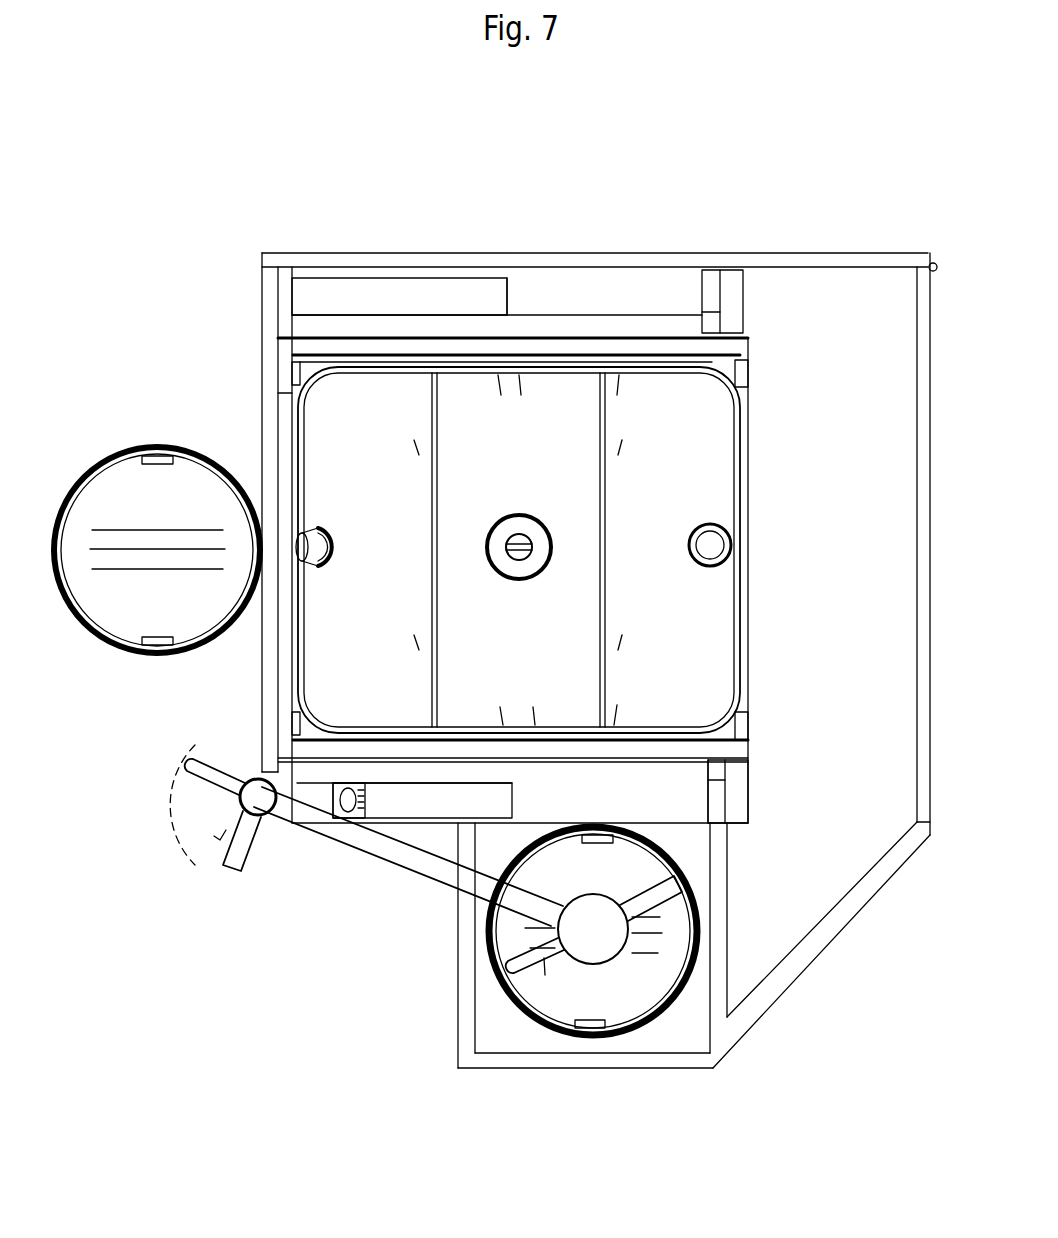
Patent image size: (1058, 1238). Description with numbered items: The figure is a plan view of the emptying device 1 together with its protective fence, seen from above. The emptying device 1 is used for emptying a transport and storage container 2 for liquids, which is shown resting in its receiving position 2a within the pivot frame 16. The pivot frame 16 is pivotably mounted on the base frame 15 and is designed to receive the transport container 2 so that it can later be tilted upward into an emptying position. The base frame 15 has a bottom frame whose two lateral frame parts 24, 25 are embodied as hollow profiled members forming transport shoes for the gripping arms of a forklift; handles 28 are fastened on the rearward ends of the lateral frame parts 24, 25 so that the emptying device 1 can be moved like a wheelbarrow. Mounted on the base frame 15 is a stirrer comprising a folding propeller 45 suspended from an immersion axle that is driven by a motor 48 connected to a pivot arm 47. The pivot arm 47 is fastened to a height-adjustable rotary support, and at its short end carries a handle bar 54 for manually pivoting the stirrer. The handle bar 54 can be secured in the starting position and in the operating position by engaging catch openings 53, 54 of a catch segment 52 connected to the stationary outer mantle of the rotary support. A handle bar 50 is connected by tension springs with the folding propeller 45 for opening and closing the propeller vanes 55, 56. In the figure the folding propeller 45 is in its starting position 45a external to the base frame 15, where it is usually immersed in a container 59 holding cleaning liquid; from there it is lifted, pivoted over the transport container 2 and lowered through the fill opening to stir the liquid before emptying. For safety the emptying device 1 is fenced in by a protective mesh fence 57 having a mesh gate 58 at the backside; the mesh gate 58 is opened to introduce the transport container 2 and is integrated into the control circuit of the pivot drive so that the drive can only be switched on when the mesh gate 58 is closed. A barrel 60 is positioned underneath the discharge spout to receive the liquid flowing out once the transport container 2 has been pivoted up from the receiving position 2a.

The emptying device 1 is at (378, 250).
The transport and storage container 2 is at (660, 440).
The receiving position 2a is at (657, 622).
The base frame 15 is at (537, 290).
The pivot frame 16 is at (590, 345).
The lateral frame part 24 is at (612, 803).
The lateral frame part 25 is at (583, 288).
The handle 28 is at (702, 292).
The folding propeller 45 is at (560, 1030).
The starting position 45a is at (676, 910).
The pivot arm 47 is at (353, 832).
The motor 48 is at (603, 955).
The handle bar 50 is at (215, 745).
The catch segment 52 is at (207, 807).
The catch opening 53 is at (215, 852).
The handle bar 54 is at (190, 787).
The propeller vane 55 is at (512, 946).
The propeller vane 56 is at (706, 790).
The protective mesh fence 57 is at (668, 252).
The mesh gate 58 is at (918, 485).
The container with cleaning liquid 59 is at (545, 985).
The barrel 60 is at (117, 452).